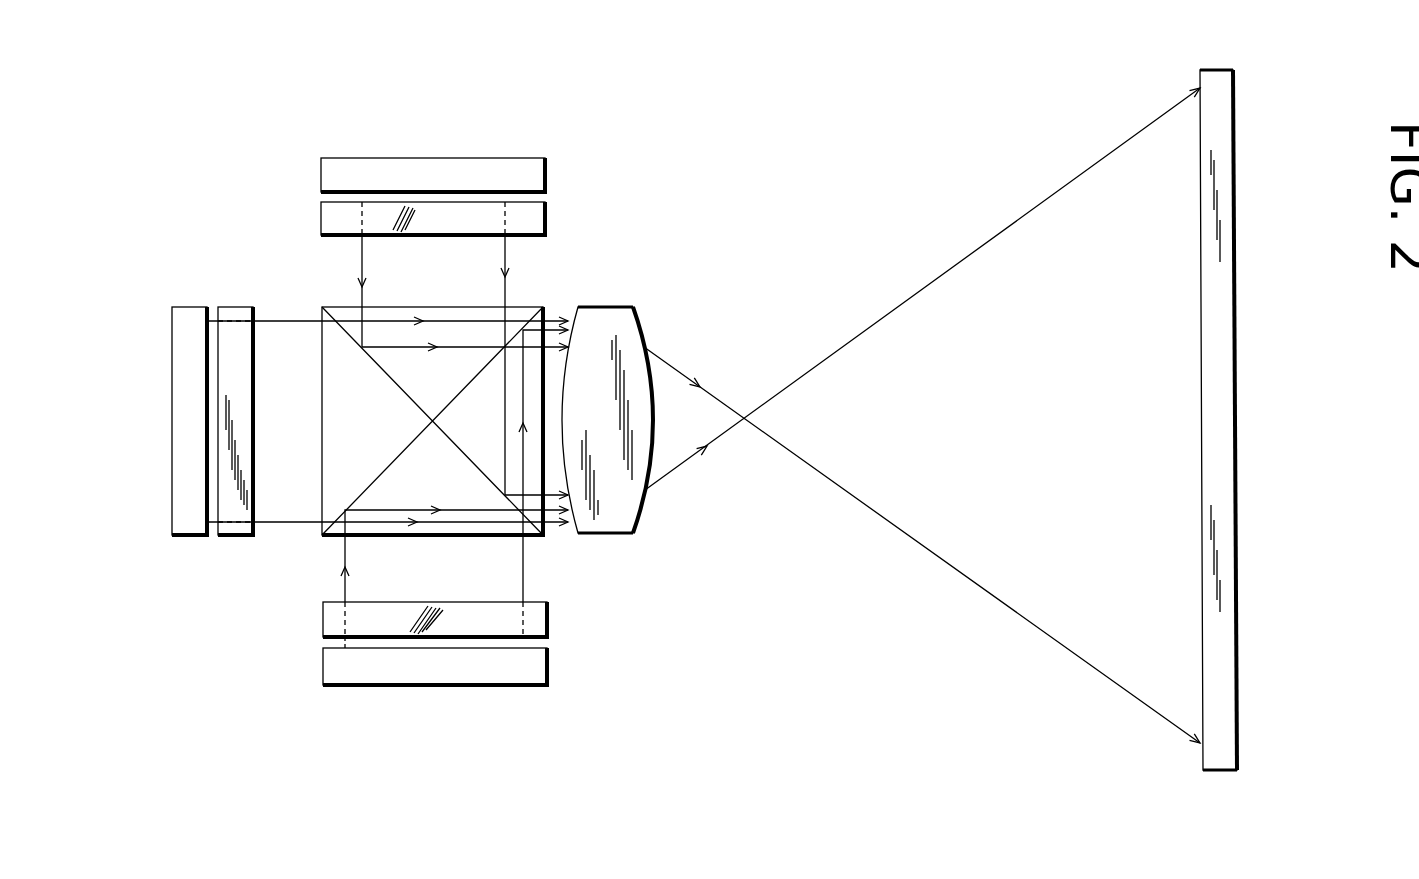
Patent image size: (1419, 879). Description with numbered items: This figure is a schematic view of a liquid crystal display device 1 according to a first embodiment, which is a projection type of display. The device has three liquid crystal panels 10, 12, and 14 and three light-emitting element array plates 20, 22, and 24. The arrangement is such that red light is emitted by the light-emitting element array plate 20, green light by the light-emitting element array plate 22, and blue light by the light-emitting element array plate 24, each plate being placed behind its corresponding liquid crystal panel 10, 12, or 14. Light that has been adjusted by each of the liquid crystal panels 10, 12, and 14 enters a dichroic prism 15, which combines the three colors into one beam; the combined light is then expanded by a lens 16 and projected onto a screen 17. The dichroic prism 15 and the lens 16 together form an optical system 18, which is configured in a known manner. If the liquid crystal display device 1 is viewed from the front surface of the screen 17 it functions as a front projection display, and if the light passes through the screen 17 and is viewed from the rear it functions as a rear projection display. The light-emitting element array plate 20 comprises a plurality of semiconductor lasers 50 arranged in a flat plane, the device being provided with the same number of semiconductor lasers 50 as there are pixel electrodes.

The liquid crystal display device 1 is at (567, 95).
The light-emitting element array plate 24 is at (545, 165).
The liquid crystal panel 14 is at (545, 206).
The dichroic prism 15 is at (540, 290).
The lens 16 is at (635, 407).
The optical system 18 is at (547, 377).
The light-emitting element array plate 22 is at (187, 305).
The liquid crystal panel 12 is at (235, 305).
The liquid crystal panel 10 is at (548, 618).
The light-emitting element array plate 20 is at (548, 663).
The semiconductor laser 50 is at (347, 675).
The screen 17 is at (1237, 380).